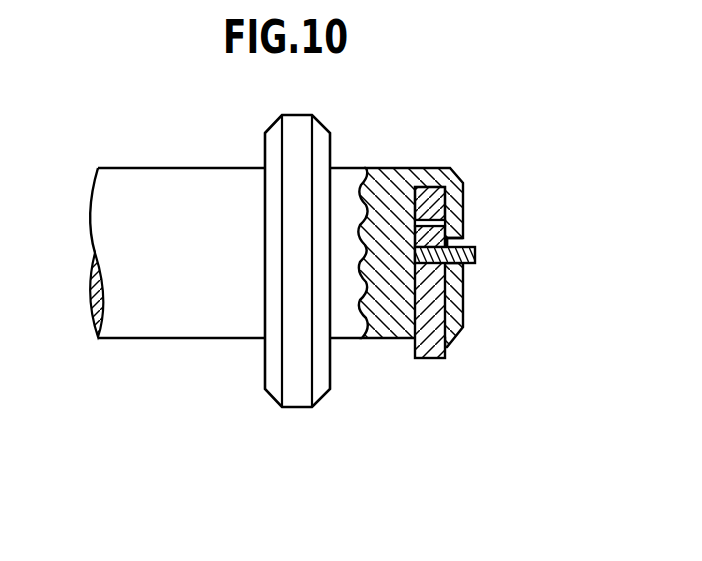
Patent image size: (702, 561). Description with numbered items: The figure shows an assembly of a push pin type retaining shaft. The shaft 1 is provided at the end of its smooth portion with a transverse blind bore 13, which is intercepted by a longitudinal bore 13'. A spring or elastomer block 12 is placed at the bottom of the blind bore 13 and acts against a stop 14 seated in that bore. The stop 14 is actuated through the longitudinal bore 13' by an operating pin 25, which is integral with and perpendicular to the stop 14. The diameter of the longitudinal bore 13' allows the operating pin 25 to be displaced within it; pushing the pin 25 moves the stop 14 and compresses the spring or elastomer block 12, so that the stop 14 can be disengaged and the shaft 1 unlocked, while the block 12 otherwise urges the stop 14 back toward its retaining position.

The shaft 1 is at (205, 313).
The spring or elastomer block 12 is at (430, 192).
The transverse blind bore 13 is at (447, 257).
The longitudinal bore 13' is at (493, 219).
The stop 14 is at (435, 359).
The operating pin 25 is at (478, 253).